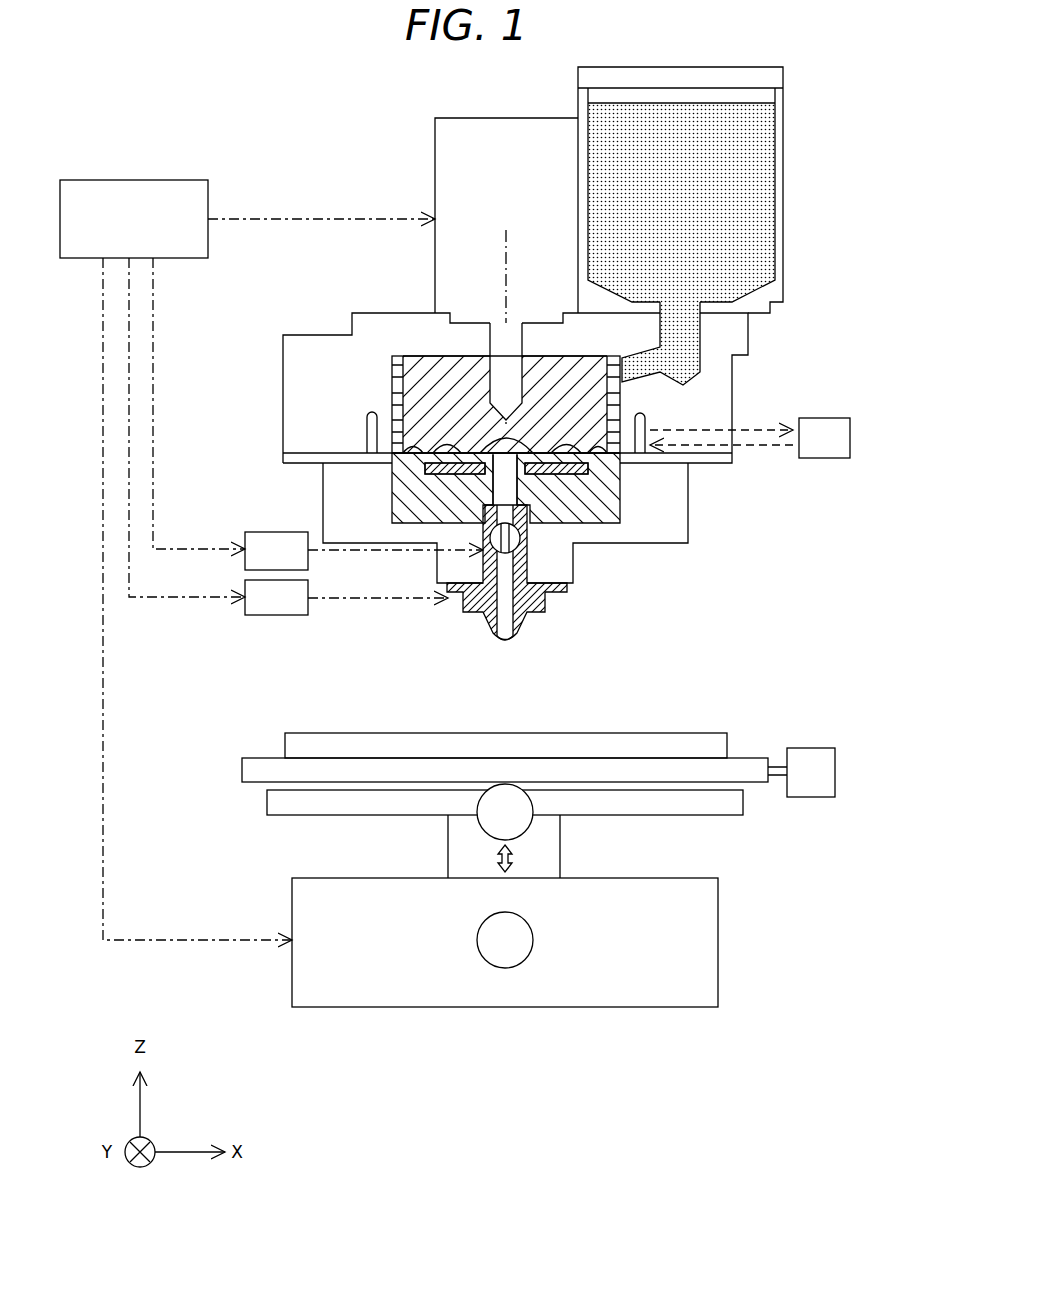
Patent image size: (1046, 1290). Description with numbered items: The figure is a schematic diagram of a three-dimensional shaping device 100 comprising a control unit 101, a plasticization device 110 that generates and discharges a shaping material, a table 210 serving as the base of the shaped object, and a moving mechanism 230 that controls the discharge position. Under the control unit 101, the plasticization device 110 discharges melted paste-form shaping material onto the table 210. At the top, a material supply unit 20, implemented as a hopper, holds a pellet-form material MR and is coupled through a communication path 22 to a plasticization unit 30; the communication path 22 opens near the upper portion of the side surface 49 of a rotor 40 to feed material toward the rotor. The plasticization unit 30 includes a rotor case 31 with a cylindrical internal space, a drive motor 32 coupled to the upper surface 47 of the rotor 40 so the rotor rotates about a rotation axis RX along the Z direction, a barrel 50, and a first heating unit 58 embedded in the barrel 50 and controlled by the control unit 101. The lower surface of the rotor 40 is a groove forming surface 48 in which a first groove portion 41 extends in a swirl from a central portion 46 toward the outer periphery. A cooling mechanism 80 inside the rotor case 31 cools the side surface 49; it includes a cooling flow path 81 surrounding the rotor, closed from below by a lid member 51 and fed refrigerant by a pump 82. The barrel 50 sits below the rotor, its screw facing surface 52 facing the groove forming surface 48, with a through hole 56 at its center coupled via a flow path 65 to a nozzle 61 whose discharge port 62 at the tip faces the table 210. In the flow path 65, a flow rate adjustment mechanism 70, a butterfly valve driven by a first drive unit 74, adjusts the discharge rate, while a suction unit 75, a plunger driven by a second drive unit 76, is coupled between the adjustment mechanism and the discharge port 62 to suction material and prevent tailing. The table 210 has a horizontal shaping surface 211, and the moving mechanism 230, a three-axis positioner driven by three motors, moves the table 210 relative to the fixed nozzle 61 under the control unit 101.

The three-dimensional shaping device 100 is at (185, 112).
The control unit 101 is at (130, 180).
The plasticization device 110 is at (378, 107).
The material supply unit 20 is at (784, 187).
The material MR is at (748, 152).
The communication path 22 is at (683, 347).
The plasticization unit 30 is at (333, 180).
The rotor case 31 is at (400, 313).
The drive motor 32 is at (435, 150).
The rotation axis RX is at (503, 287).
The rotor 40 is at (413, 383).
The first groove portion 41 is at (403, 438).
The central portion 46 is at (495, 433).
The upper surface 47 is at (428, 356).
The groove forming surface 48 is at (400, 446).
The side surface 49 is at (633, 400).
The barrel 50 is at (392, 498).
The lid member 51 is at (733, 462).
The screw facing surface 52 is at (393, 427).
The through hole 56 is at (513, 488).
The first heating unit 58 is at (573, 467).
The nozzle 61 is at (520, 625).
The discharge port 62 is at (507, 641).
The flow path 65 is at (513, 582).
The flow rate adjustment mechanism 70 is at (483, 553).
The first drive unit 74 is at (263, 532).
The suction unit 75 is at (462, 603).
The second drive unit 76 is at (263, 615).
The cooling mechanism 80 is at (647, 420).
The cooling flow path 81 is at (395, 430).
The pump 82 is at (820, 418).
The table 210 is at (665, 740).
The shaping surface 211 is at (585, 733).
The moving mechanism 230 is at (767, 862).